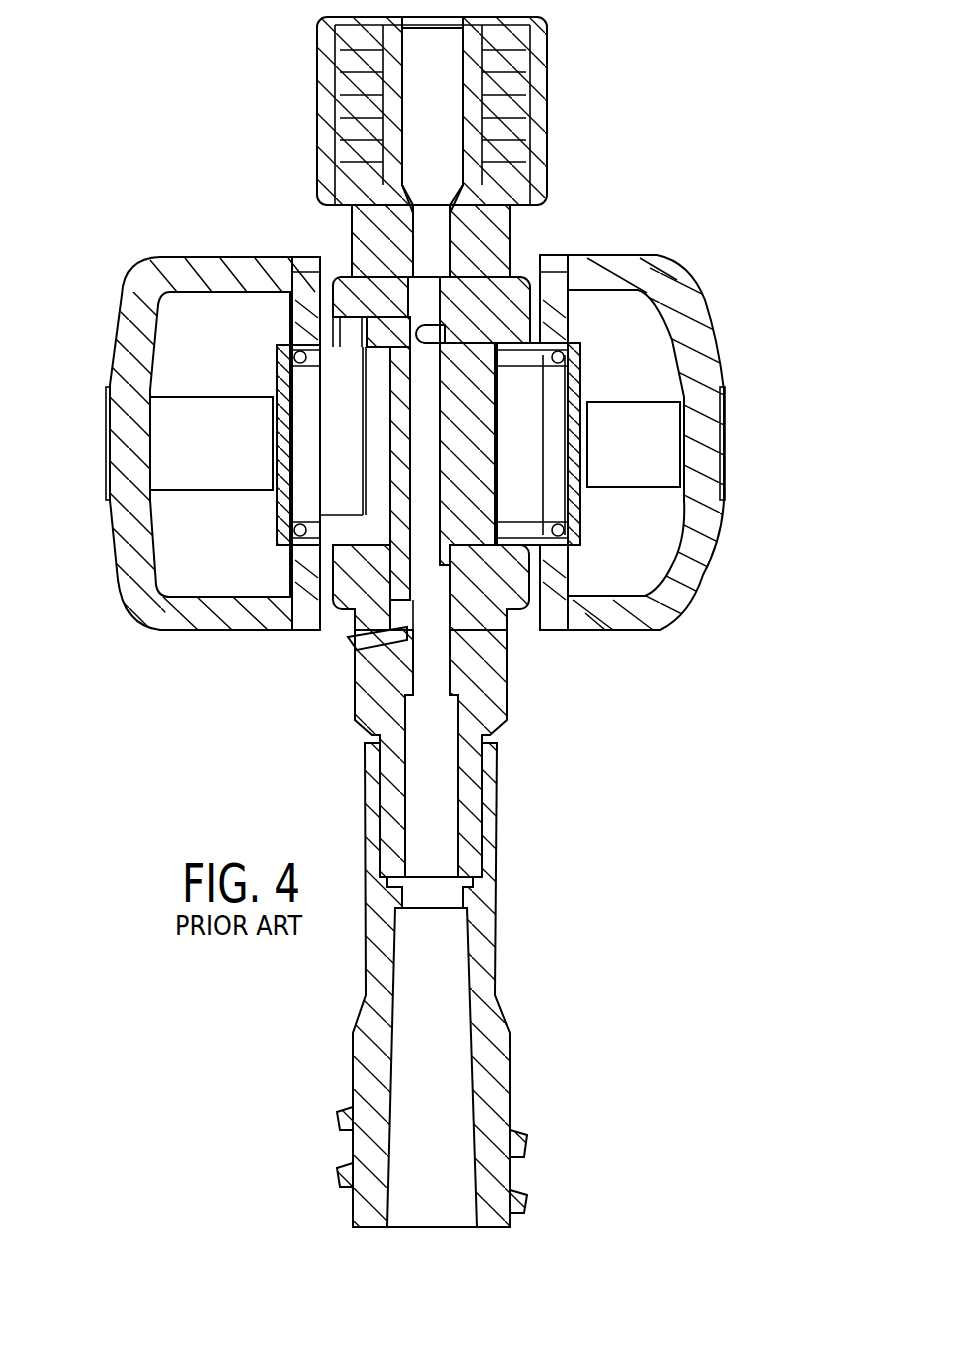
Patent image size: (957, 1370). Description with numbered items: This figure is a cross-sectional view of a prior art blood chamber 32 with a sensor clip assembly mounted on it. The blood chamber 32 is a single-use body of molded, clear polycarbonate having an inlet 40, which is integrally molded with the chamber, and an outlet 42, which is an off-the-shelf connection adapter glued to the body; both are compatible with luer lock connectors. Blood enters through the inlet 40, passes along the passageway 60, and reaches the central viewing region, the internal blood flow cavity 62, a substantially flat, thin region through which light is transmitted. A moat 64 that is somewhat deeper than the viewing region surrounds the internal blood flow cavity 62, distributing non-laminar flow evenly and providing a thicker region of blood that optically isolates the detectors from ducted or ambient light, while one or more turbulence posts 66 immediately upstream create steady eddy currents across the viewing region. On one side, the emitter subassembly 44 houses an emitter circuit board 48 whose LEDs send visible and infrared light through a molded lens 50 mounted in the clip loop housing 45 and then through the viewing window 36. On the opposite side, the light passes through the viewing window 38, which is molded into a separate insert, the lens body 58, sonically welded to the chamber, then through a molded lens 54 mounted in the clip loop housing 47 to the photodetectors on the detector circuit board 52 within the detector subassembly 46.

The blood chamber 32 is at (498, 685).
The viewing window 36 is at (470, 408).
The viewing window 38 is at (403, 367).
The inlet 40 is at (540, 53).
The outlet 42 is at (505, 1120).
The emitter subassembly 44 is at (690, 330).
The clip loop housing 45 is at (560, 568).
The detector subassembly 46 is at (125, 332).
The clip loop housing 47 is at (305, 566).
The emitter circuit board 48 is at (578, 373).
The molded lens 50 is at (535, 447).
The detector circuit board 52 is at (277, 366).
The molded lens 54 is at (302, 440).
The lens body 58 is at (357, 632).
The passageway 60 is at (437, 250).
The internal blood flow cavity 62 is at (422, 465).
The moat 64 is at (453, 297).
The turbulence post 66 is at (445, 334).